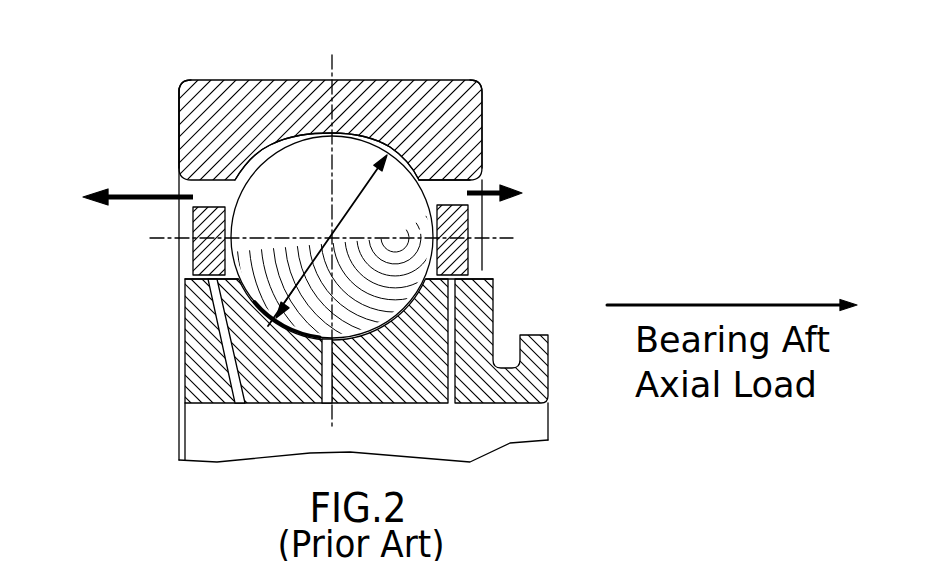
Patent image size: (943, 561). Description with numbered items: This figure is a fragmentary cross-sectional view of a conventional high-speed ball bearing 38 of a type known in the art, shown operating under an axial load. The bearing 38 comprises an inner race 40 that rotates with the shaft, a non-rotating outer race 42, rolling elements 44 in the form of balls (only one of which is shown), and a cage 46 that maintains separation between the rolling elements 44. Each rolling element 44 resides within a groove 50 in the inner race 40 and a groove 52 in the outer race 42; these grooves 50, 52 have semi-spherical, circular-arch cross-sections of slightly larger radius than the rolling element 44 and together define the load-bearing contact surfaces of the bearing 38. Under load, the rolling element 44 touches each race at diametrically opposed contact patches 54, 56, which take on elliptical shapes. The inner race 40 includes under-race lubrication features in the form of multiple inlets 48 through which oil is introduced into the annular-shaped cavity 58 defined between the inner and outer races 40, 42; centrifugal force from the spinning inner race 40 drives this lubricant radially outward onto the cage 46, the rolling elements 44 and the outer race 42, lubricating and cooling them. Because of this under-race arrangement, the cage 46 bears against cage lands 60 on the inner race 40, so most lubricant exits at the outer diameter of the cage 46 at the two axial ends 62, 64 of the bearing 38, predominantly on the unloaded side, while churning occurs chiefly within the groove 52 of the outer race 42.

The bearing 38 is at (88, 130).
The inner race 40 is at (200, 370).
The outer race 42 is at (378, 78).
The rolling elements 44 is at (268, 160).
The cage 46 is at (472, 230).
The inlets 48 is at (241, 404).
The groove 50 is at (292, 310).
The groove 52 is at (250, 168).
The contact patch 54 is at (288, 314).
The contact patch 56 is at (388, 153).
The annular-shaped cavity 58 is at (458, 168).
The cage lands 60 is at (492, 271).
The axial end 62 is at (178, 88).
The axial end 64 is at (483, 92).